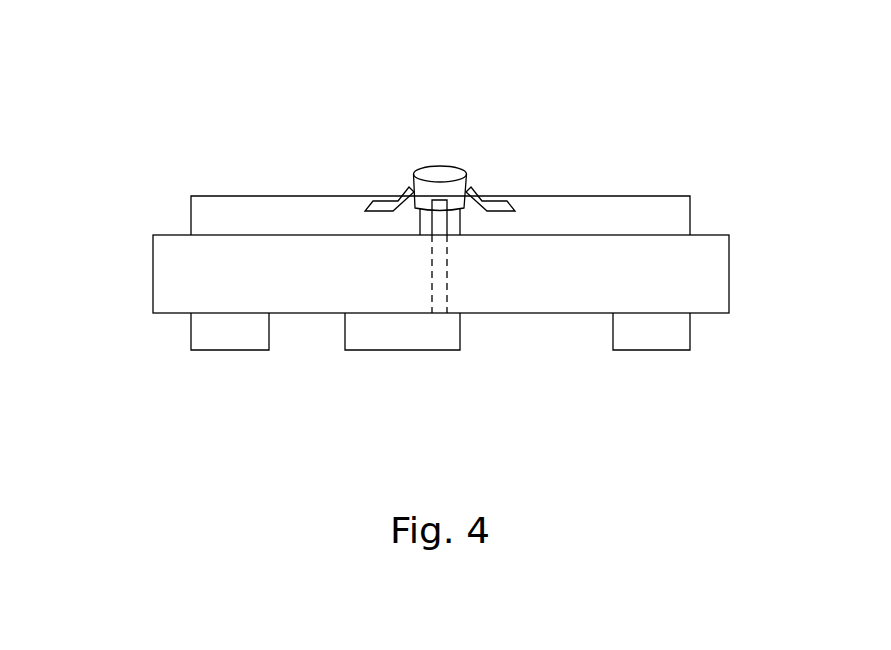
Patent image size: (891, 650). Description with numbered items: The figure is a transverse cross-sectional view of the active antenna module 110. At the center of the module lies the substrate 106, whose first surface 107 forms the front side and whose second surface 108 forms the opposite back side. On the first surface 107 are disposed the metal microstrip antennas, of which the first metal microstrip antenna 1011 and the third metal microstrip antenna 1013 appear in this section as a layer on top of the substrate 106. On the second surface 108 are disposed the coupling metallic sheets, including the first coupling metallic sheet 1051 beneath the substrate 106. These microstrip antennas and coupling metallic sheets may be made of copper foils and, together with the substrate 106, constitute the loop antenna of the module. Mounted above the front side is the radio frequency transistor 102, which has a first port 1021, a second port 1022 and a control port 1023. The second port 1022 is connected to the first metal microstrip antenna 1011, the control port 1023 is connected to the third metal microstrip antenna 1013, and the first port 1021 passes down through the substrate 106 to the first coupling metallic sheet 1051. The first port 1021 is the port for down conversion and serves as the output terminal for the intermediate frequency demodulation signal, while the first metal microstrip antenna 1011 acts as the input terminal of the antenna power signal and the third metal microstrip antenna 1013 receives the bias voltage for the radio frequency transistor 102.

The active antenna module 110 is at (480, 52).
The radio frequency transistor 102 is at (439, 226).
The first port 1021 is at (440, 222).
The second port 1022 is at (390, 200).
The control port 1023 is at (490, 197).
The first metal microstrip antenna 1011 is at (258, 196).
The third metal microstrip antenna 1013 is at (716, 210).
The first surface 107 is at (511, 166).
The substrate 106 is at (729, 260).
The second surface 108 is at (504, 363).
The first coupling metallic sheet 1051 is at (388, 337).